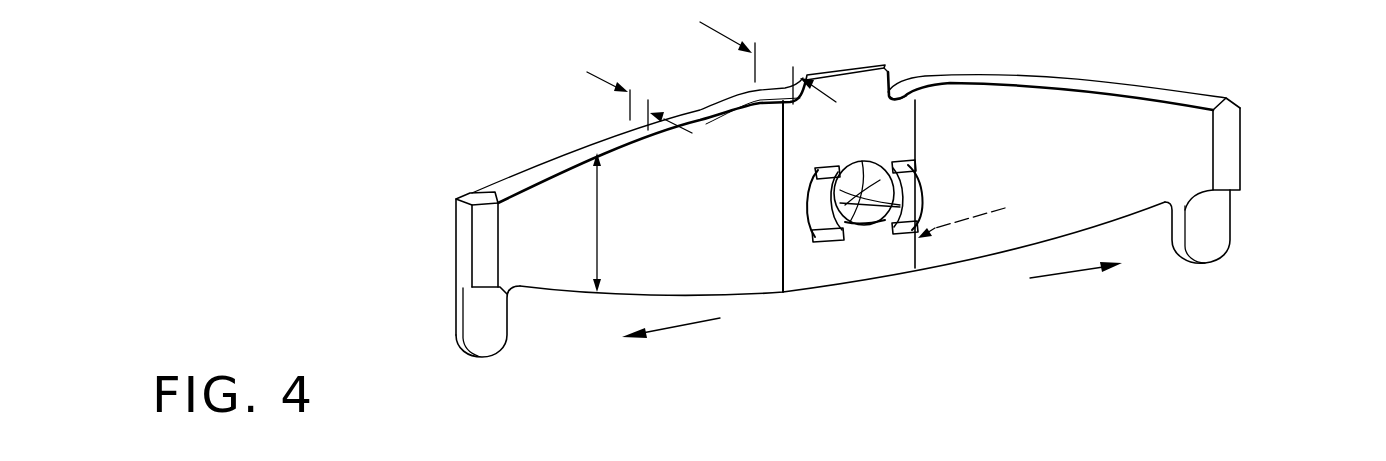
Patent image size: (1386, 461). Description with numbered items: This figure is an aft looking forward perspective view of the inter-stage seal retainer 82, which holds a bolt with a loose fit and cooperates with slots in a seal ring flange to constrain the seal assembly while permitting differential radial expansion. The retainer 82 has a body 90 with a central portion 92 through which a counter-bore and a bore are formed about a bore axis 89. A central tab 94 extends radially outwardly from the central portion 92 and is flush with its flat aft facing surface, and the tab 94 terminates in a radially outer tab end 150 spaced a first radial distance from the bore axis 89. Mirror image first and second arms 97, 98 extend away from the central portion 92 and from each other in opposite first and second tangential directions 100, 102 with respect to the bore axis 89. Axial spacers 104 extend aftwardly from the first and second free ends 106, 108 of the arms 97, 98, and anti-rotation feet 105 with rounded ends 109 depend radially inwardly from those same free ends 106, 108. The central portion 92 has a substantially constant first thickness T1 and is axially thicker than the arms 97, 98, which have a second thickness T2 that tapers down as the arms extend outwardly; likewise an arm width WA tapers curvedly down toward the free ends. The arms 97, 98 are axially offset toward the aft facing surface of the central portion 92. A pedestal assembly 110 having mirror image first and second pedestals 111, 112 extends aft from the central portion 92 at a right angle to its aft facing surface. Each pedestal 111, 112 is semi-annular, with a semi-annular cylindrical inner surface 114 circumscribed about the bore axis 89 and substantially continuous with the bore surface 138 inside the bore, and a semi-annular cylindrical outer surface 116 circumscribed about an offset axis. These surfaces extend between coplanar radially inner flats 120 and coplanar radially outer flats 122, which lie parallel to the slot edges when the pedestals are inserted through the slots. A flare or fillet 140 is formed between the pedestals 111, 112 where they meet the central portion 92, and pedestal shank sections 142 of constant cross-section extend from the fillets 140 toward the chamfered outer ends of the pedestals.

The inter-stage seal retainer 82 is at (1156, 307).
The bore axis 89 is at (980, 217).
The body 90 is at (720, 118).
The central portion 92 is at (828, 270).
The central tab 94 is at (907, 80).
The first arm 97 is at (568, 158).
The second arm 98 is at (1053, 82).
The first tangential direction 100 is at (690, 327).
The second tangential direction 102 is at (1070, 275).
The axial spacer 104 is at (465, 252).
The anti-rotation foot 105 is at (483, 323).
The first free end 106 is at (470, 197).
The second free end 108 is at (1217, 104).
The rounded end 109 is at (472, 355).
The pedestal assembly 110 is at (922, 142).
The first pedestal 111 is at (823, 210).
The second pedestal 112 is at (930, 170).
The semi-annular cylindrical inner surface 114 is at (920, 207).
The semi-annular cylindrical outer surface 116 is at (808, 194).
The radially inner flat 120 is at (820, 243).
The radially outer flat 122 is at (893, 160).
The bore surface 138 is at (858, 240).
The flare or fillet 140 is at (812, 163).
The pedestal shank section 142 is at (812, 176).
The radially outer tab end 150 is at (875, 66).
The first thickness T1 is at (710, 30).
The second thickness T2 is at (603, 83).
The arm width WA is at (597, 223).